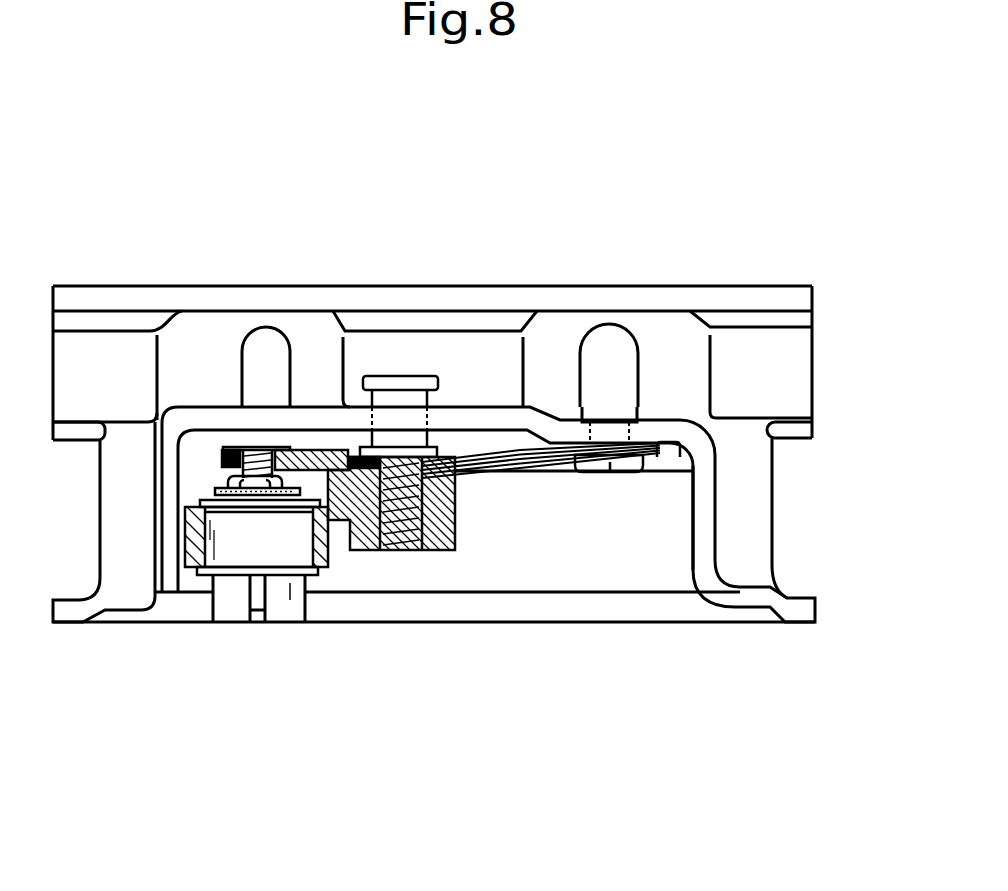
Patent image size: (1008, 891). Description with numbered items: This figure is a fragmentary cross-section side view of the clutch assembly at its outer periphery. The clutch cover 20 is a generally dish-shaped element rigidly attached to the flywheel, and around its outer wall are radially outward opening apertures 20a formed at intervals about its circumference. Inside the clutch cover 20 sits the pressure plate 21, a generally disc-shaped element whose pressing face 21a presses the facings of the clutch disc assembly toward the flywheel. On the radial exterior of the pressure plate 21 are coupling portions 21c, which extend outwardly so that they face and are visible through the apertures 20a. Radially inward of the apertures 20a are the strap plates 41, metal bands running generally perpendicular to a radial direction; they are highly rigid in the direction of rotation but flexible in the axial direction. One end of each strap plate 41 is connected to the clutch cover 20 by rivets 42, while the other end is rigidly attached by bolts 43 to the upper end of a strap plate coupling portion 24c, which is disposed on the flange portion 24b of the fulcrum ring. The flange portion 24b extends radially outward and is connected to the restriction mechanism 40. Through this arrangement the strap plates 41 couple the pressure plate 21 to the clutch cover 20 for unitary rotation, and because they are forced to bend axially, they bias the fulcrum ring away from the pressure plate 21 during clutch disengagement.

The clutch cover 20 is at (655, 347).
The apertures 20a is at (695, 502).
The pressure plate 21 is at (578, 552).
The pressing face 21a is at (657, 600).
The coupling portions 21c is at (197, 570).
The flange portion 24b is at (288, 462).
The strap plate coupling portions 24c is at (447, 540).
The restriction mechanism 40 is at (337, 585).
The strap plates 41 is at (490, 460).
The rivets 42 is at (613, 473).
The bolts 43 is at (420, 462).